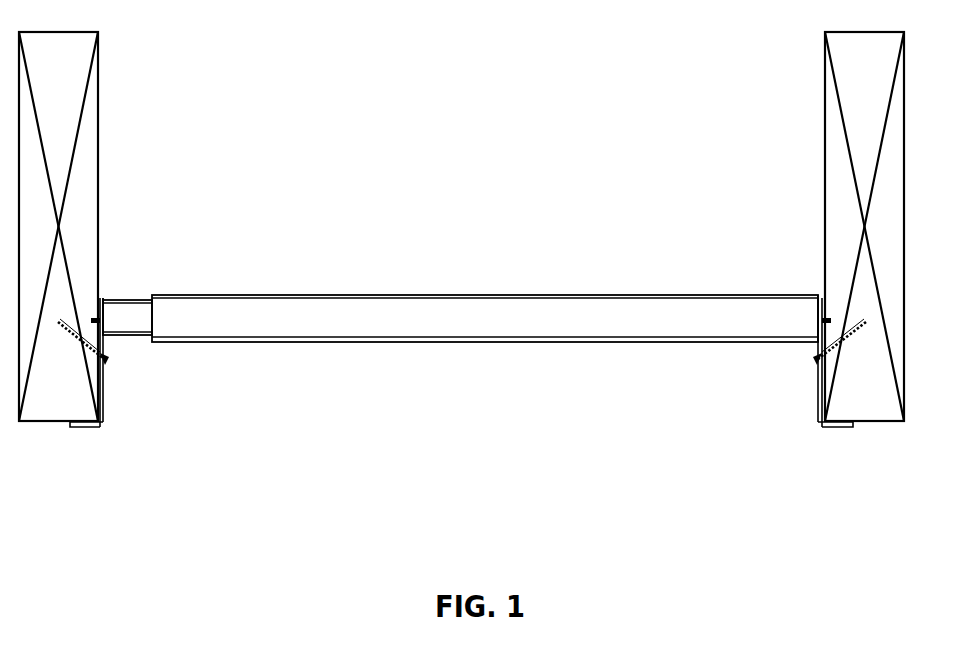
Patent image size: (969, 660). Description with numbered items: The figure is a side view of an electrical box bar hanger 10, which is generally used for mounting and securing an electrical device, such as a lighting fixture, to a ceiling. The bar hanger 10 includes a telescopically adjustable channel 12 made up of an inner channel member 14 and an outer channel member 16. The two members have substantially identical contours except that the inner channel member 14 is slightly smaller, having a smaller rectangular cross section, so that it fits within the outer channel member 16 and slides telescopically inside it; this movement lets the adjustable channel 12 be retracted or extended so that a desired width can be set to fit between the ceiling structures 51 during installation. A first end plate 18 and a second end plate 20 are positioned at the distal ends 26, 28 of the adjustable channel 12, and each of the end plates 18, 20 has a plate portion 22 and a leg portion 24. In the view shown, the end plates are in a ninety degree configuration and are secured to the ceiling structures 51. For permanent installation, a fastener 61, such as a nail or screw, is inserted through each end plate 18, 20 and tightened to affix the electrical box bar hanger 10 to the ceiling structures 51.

The electrical box bar hanger 10 is at (461, 309).
The telescopically adjustable channel 12 is at (424, 352).
The inner channel member 14 is at (130, 312).
The outer channel member 16 is at (485, 335).
The first end plate 18 is at (455, 400).
The second end plate 20 is at (806, 421).
The plate portion 22 is at (104, 385).
The leg portion 24 is at (88, 428).
The distal end 26 is at (103, 298).
The distal end 28 is at (820, 296).
The ceiling structure 51 is at (93, 125).
The fastener 61 is at (108, 358).